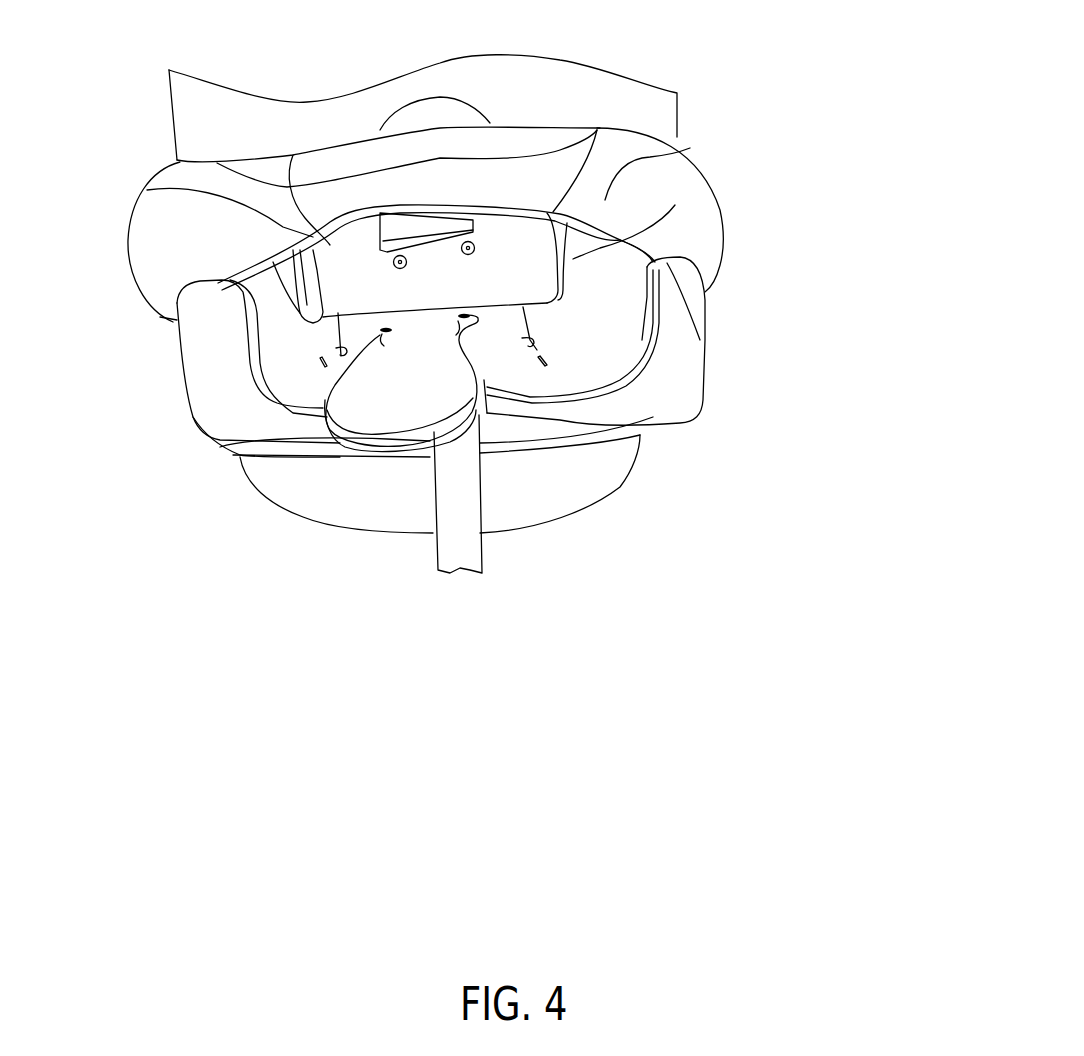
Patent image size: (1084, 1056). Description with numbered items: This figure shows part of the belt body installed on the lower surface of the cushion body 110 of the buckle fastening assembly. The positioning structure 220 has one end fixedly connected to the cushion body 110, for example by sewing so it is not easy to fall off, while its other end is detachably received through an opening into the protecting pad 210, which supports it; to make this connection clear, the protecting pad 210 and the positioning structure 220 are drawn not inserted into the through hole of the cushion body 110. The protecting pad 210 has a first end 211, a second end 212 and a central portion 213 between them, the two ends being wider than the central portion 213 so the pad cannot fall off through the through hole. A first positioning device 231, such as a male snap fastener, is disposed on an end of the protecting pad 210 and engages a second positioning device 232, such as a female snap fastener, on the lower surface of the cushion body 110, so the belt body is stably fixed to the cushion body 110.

The cushion body 110 is at (203, 240).
The protecting pad 210 is at (644, 426).
The first end 211 is at (470, 316).
The second end 212 is at (410, 402).
The central portion 213 is at (443, 345).
The positioning structure 220 is at (400, 322).
The first positioning device 231 is at (400, 322).
The second positioning device 232 is at (472, 246).